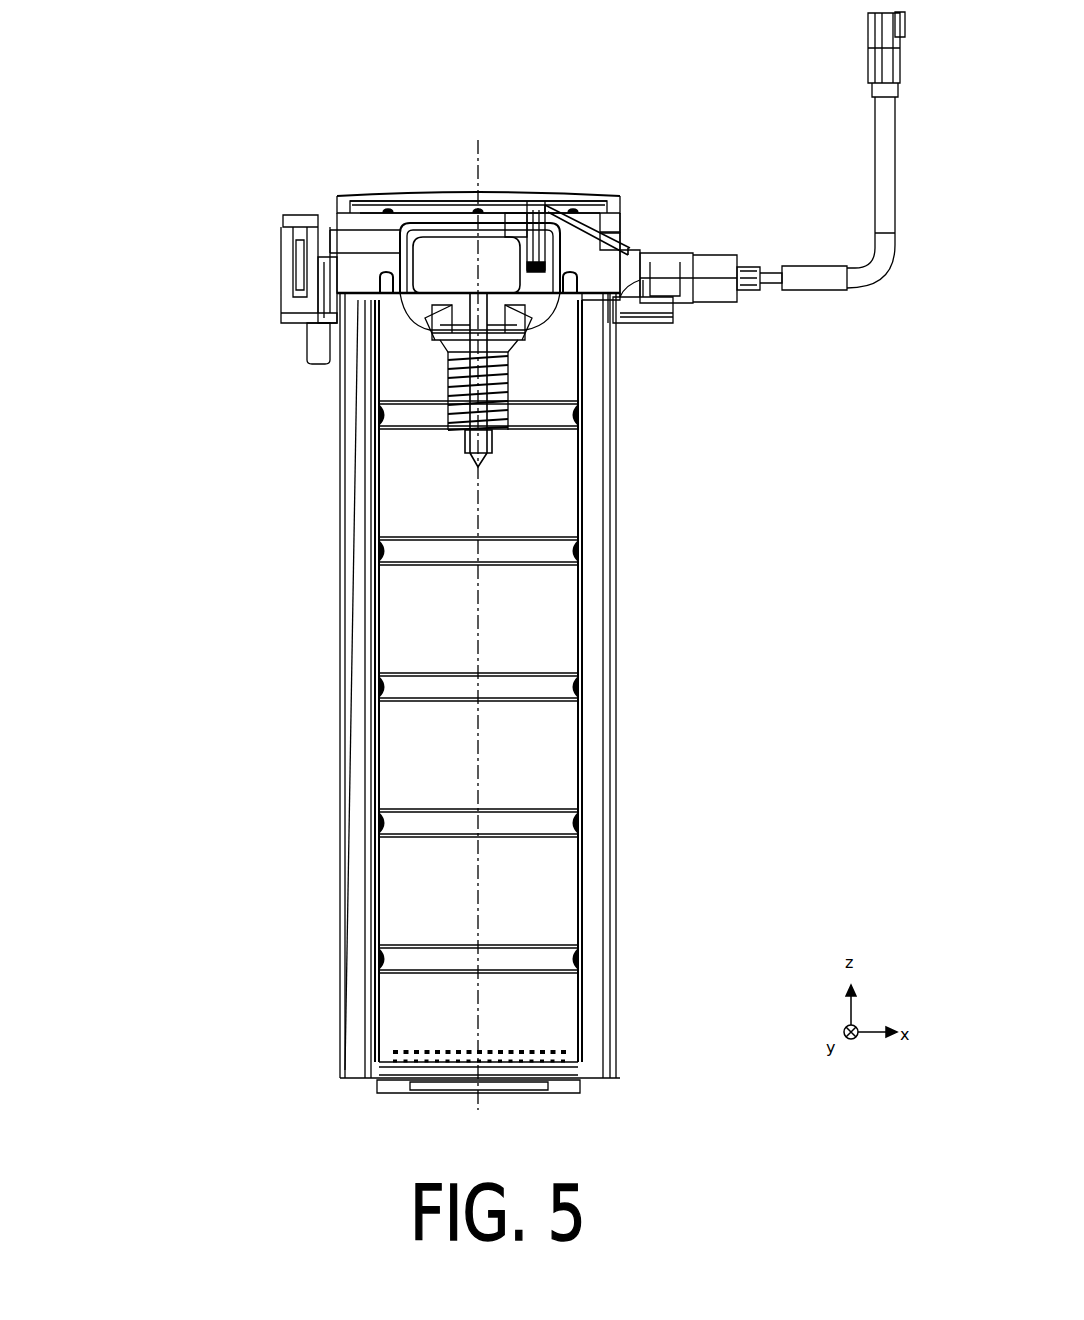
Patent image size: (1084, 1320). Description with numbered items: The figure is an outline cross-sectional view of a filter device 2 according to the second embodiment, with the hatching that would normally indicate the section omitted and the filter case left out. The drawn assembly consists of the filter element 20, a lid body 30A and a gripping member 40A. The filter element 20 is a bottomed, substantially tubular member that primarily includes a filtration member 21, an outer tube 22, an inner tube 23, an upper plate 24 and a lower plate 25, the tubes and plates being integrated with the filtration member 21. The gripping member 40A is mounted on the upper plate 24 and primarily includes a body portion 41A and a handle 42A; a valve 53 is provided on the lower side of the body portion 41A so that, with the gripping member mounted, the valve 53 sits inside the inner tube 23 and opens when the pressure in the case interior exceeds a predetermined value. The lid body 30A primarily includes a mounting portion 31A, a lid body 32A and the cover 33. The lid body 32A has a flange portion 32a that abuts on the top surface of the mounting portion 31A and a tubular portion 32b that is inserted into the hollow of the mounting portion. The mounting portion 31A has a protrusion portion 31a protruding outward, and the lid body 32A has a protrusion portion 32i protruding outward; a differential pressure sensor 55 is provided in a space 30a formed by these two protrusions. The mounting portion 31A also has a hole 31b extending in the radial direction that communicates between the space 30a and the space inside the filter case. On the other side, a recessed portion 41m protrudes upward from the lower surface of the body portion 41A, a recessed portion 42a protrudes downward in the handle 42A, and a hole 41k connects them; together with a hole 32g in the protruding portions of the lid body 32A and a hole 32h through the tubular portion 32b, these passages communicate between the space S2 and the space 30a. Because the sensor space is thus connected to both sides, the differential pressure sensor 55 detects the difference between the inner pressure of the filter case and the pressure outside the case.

The filter device 2 is at (696, 24).
The filter element 20 is at (215, 650).
The filtration member 21 is at (370, 587).
The outer tube 22 is at (345, 648).
The inner tube 23 is at (410, 730).
The upper plate 24 is at (360, 300).
The lower plate 25 is at (348, 1070).
The space S2 is at (555, 735).
The lid body 30A is at (155, 215).
The space 30a is at (695, 312).
The mounting portion 31A is at (330, 300).
The protrusion portion 31a is at (650, 312).
The hole 31b is at (660, 300).
The lid body 32A is at (375, 233).
The flange portion 32a is at (300, 345).
The tubular portion 32b is at (330, 330).
The hole 32g is at (530, 200).
The hole 32h is at (600, 192).
The protrusion portion 32i is at (640, 240).
The cover 33 is at (480, 190).
The gripping member 40A is at (290, 50).
The body portion 41A is at (387, 197).
The hole 41k is at (548, 330).
The recessed portion 41m is at (525, 300).
The handle 42A is at (437, 197).
The recessed portion 42a is at (510, 200).
The valve 53 is at (505, 432).
The differential pressure sensor 55 is at (710, 295).